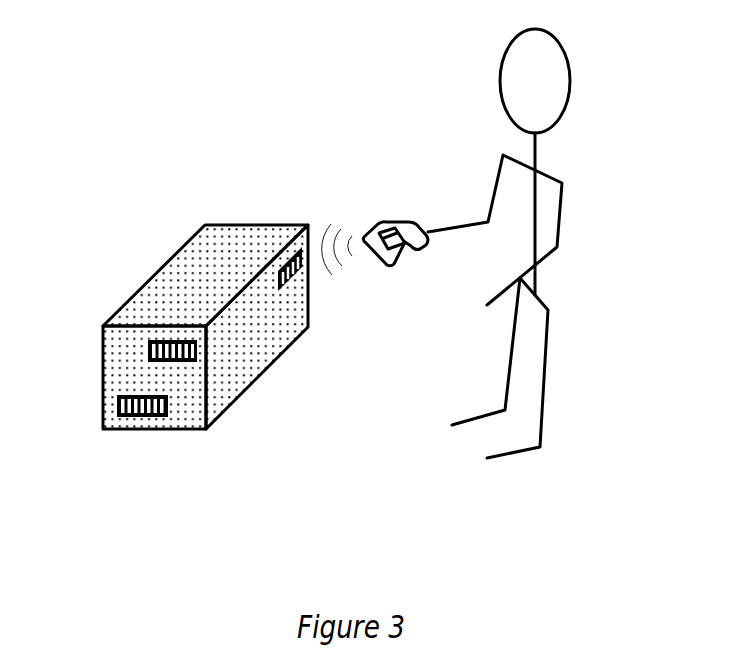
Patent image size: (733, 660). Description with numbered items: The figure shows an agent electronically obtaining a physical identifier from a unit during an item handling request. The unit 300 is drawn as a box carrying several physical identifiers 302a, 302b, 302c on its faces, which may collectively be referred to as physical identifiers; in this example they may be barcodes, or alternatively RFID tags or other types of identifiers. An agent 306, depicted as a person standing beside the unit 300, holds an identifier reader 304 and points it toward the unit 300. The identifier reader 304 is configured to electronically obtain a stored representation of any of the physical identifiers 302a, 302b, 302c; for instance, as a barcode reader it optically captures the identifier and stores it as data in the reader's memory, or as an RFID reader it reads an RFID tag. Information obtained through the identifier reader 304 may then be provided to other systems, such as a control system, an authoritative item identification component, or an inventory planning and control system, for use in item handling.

The unit 300 is at (105, 273).
The physical identifier 302a is at (142, 420).
The physical identifier 302b is at (193, 372).
The physical identifier 302c is at (292, 296).
The identifier reader 304 is at (382, 207).
The agent 306 is at (570, 160).